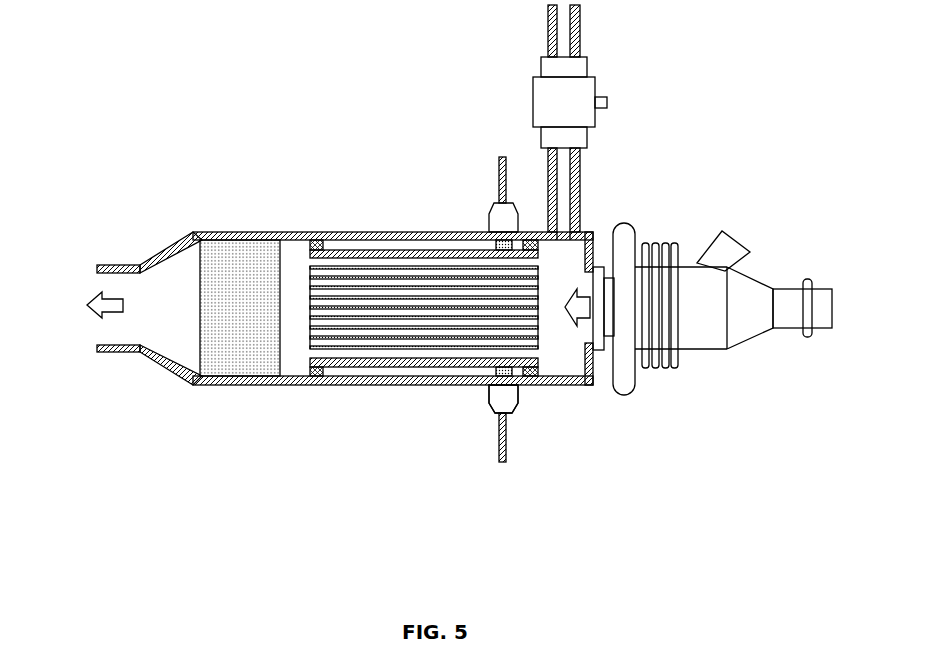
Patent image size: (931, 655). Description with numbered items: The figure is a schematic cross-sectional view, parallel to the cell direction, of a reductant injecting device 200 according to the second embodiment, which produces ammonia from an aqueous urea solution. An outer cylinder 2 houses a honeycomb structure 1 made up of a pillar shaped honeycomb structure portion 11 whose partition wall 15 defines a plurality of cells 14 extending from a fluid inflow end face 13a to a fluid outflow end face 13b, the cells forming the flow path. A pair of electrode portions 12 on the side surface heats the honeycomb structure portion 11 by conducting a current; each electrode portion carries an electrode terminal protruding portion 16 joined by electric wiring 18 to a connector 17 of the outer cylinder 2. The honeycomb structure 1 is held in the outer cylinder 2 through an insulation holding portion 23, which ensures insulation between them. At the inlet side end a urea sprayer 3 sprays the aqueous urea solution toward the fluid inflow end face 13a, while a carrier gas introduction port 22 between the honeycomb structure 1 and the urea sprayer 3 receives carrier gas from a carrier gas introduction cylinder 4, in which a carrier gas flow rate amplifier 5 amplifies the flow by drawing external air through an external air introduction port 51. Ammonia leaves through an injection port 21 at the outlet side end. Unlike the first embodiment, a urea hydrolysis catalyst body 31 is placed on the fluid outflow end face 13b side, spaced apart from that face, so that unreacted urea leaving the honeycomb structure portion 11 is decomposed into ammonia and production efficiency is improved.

The reductant injecting device 200 is at (510, 585).
The honeycomb structure 1 is at (413, 350).
The honeycomb structure portion 11 is at (413, 329).
The electrode portions 12 is at (407, 363).
The fluid inflow end face 13a is at (540, 323).
The fluid outflow end face 13b is at (308, 282).
The cells 14 is at (367, 342).
The partition wall 15 is at (337, 340).
The electrode terminal protruding portions 16 is at (517, 385).
The connector 17 is at (490, 393).
The electric wiring 18 is at (507, 447).
The outer cylinder 2 is at (398, 232).
The injection port 21 is at (110, 329).
The carrier gas introduction port 22 is at (565, 232).
The insulation holding portion 23 is at (314, 240).
The urea sprayer 3 is at (690, 300).
The urea hydrolysis catalyst body 31 is at (246, 385).
The carrier gas introduction cylinder 4 is at (582, 172).
The carrier gas flow rate amplifier 5 is at (545, 107).
The external air introduction port 51 is at (607, 100).